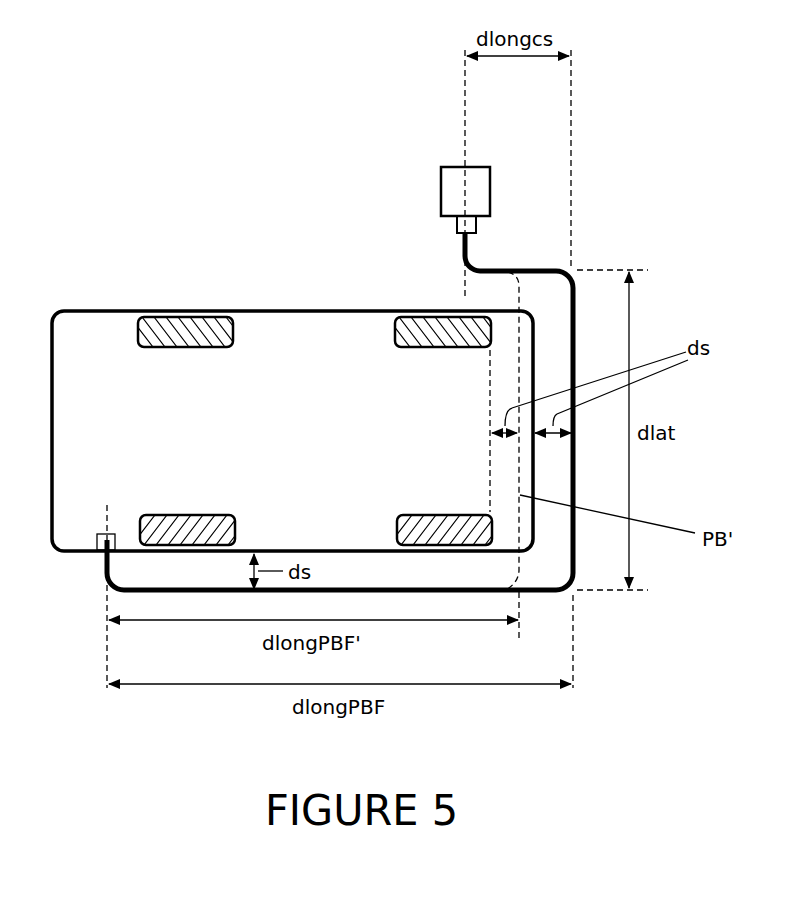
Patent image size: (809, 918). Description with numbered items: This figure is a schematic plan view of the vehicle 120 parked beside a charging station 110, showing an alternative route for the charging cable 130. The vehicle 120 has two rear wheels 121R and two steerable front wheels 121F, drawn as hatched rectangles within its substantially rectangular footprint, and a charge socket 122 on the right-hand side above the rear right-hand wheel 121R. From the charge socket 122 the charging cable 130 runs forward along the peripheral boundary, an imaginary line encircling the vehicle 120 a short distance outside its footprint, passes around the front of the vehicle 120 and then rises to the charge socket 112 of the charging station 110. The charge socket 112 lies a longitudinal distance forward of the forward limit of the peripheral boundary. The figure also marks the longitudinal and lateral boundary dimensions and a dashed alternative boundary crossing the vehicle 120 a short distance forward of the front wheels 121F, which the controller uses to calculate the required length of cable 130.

The charging station 110 is at (500, 148).
The charging station charge socket 112 is at (457, 227).
The vehicle 120 is at (662, 319).
The rear wheels 121R is at (192, 522).
The front wheels 121F is at (422, 523).
The charge socket 122 is at (100, 543).
The charging cable 130 is at (532, 268).